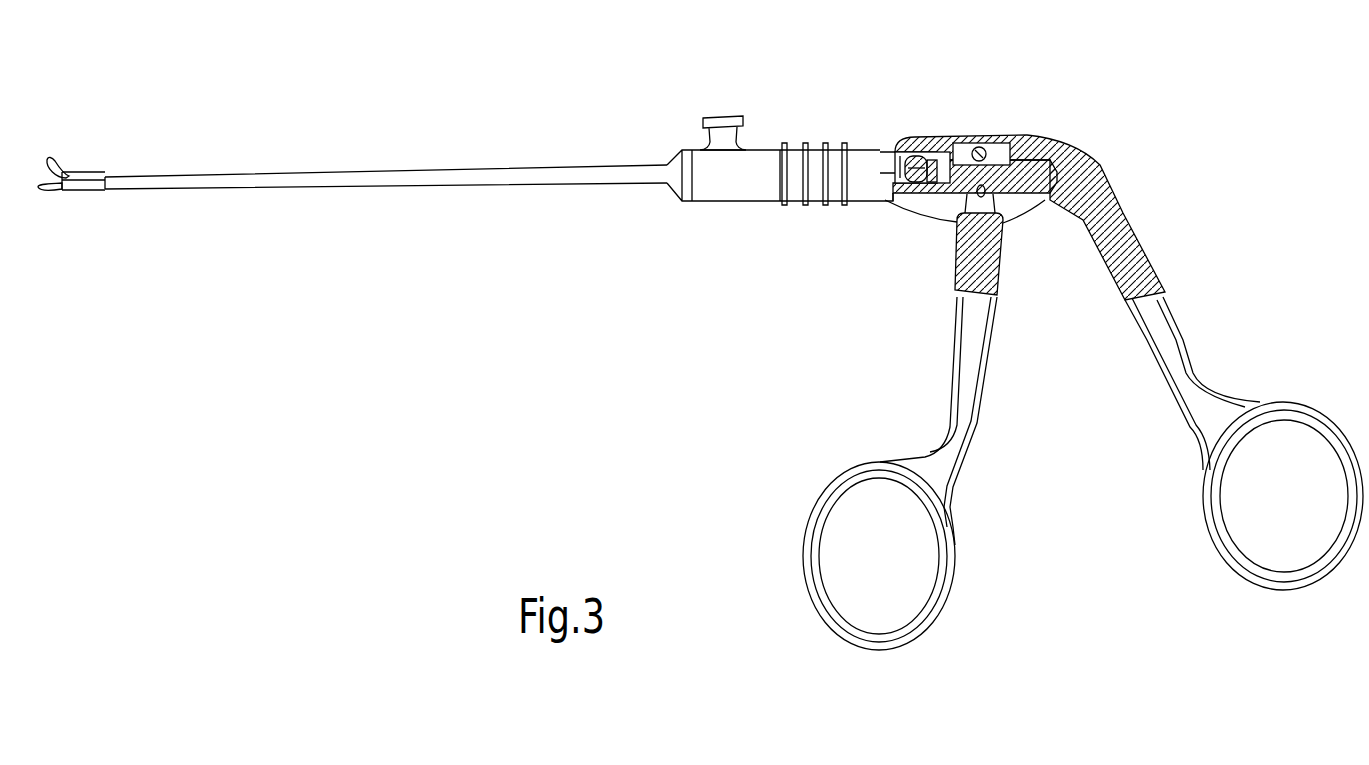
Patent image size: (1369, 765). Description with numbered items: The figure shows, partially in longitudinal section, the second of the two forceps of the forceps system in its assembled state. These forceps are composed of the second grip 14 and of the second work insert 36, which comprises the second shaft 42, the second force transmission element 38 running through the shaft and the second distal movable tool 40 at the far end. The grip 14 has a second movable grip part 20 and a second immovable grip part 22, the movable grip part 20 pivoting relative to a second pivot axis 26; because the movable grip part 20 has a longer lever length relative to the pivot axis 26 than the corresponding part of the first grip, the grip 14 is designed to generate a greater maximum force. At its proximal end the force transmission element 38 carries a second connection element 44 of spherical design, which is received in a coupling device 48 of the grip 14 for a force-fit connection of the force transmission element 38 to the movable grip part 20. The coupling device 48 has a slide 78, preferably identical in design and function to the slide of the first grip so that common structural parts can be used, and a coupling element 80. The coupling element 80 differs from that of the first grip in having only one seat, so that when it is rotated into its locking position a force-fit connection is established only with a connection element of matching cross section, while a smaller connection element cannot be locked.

The second grip 14 is at (1164, 165).
The second movable grip part 20 is at (957, 388).
The second immovable grip part 22 is at (1133, 261).
The second pivot axis 26 is at (980, 147).
The second work insert 36 is at (80, 171).
The second force transmission element 38 is at (898, 158).
The second distal movable tool 40 is at (50, 158).
The second shaft 42 is at (373, 180).
The second connection element 44 is at (930, 152).
The coupling device 48 is at (930, 205).
The slide 78 is at (1008, 185).
The coupling element 80 is at (915, 158).